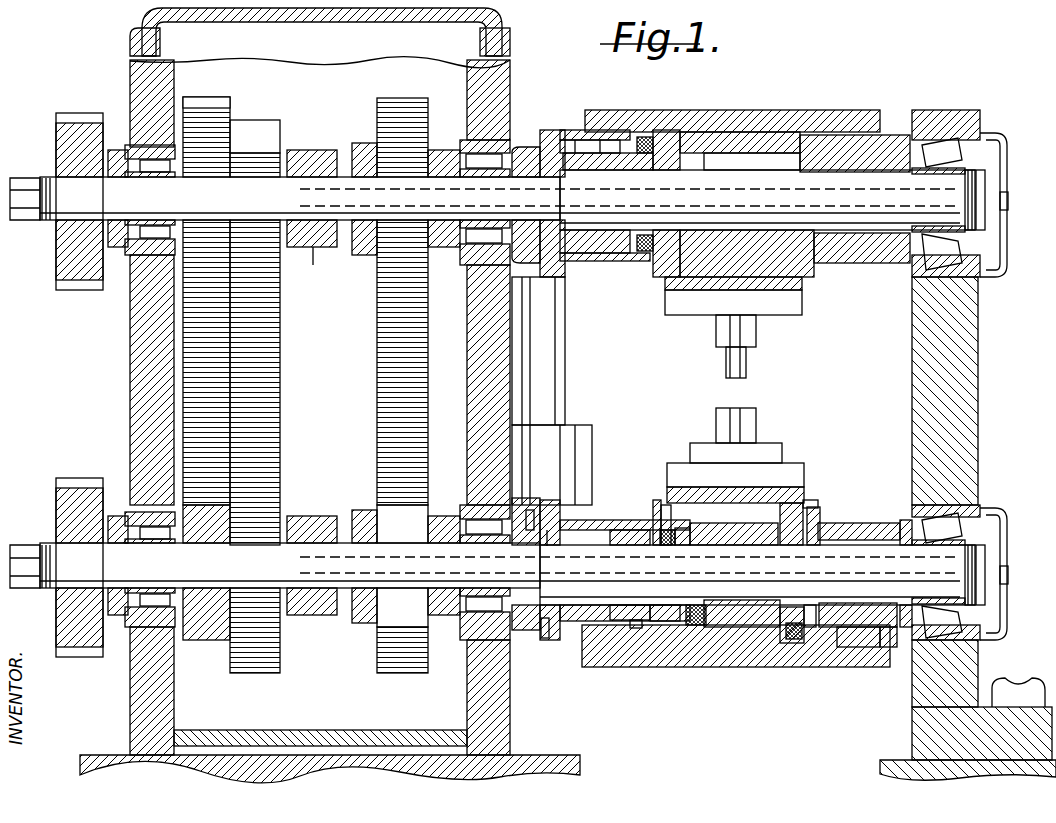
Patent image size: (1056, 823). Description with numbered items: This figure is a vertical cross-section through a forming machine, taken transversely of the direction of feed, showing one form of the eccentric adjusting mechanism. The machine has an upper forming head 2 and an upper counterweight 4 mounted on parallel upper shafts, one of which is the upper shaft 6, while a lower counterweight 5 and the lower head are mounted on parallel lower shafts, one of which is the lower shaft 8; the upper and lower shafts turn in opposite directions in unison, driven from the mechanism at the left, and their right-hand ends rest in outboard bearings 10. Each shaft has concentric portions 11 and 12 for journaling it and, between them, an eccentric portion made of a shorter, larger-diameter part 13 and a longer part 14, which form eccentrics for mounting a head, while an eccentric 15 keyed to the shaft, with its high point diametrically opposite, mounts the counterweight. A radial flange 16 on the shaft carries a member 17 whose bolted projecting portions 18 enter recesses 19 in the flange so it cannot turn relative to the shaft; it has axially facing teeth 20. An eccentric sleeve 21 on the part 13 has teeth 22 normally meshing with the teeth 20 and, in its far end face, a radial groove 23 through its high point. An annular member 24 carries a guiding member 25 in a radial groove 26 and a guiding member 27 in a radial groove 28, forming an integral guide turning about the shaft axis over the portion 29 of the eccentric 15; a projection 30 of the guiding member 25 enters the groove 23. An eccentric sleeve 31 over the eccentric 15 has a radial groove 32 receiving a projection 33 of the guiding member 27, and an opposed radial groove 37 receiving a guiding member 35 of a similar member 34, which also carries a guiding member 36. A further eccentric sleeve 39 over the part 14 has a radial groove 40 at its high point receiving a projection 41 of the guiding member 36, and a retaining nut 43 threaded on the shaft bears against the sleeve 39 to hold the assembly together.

The upper forming head 2 is at (803, 300).
The upper counterweight 4 is at (762, 122).
The lower counterweight 5 is at (669, 647).
The upper shaft 6 is at (878, 183).
The lower shaft 8 is at (843, 562).
The outboard bearing 10 is at (955, 403).
The concentric portion 11 is at (494, 562).
The concentric portion 12 is at (911, 672).
The eccentric part 13 is at (612, 550).
The eccentric part 14 is at (712, 595).
The eccentric 15 is at (776, 613).
The radial flange 16 is at (519, 623).
The member 17 is at (562, 505).
The projecting portions 18 is at (530, 528).
The recesses 19 is at (524, 518).
The teeth 20 is at (547, 545).
The eccentric sleeve 21 is at (582, 615).
The teeth 22 is at (552, 540).
The radial groove 23 is at (635, 617).
The annular member 24 is at (654, 503).
The guiding member 25 is at (658, 618).
The radial groove 26 is at (660, 615).
The guiding member 27 is at (660, 507).
The radial groove 28 is at (670, 540).
The portion of eccentric 29 is at (670, 532).
The projection 30 is at (639, 615).
The eccentric sleeve 31 is at (760, 523).
The radial groove 32 is at (700, 510).
The projection 33 is at (670, 510).
The member 34 is at (802, 640).
The guiding member 35 is at (812, 508).
The guiding member 36 is at (808, 640).
The radial groove 37 is at (803, 518).
The eccentric sleeve 39 is at (883, 632).
The radial groove 40 is at (851, 628).
The projection 41 is at (813, 607).
The retaining nut 43 is at (907, 547).